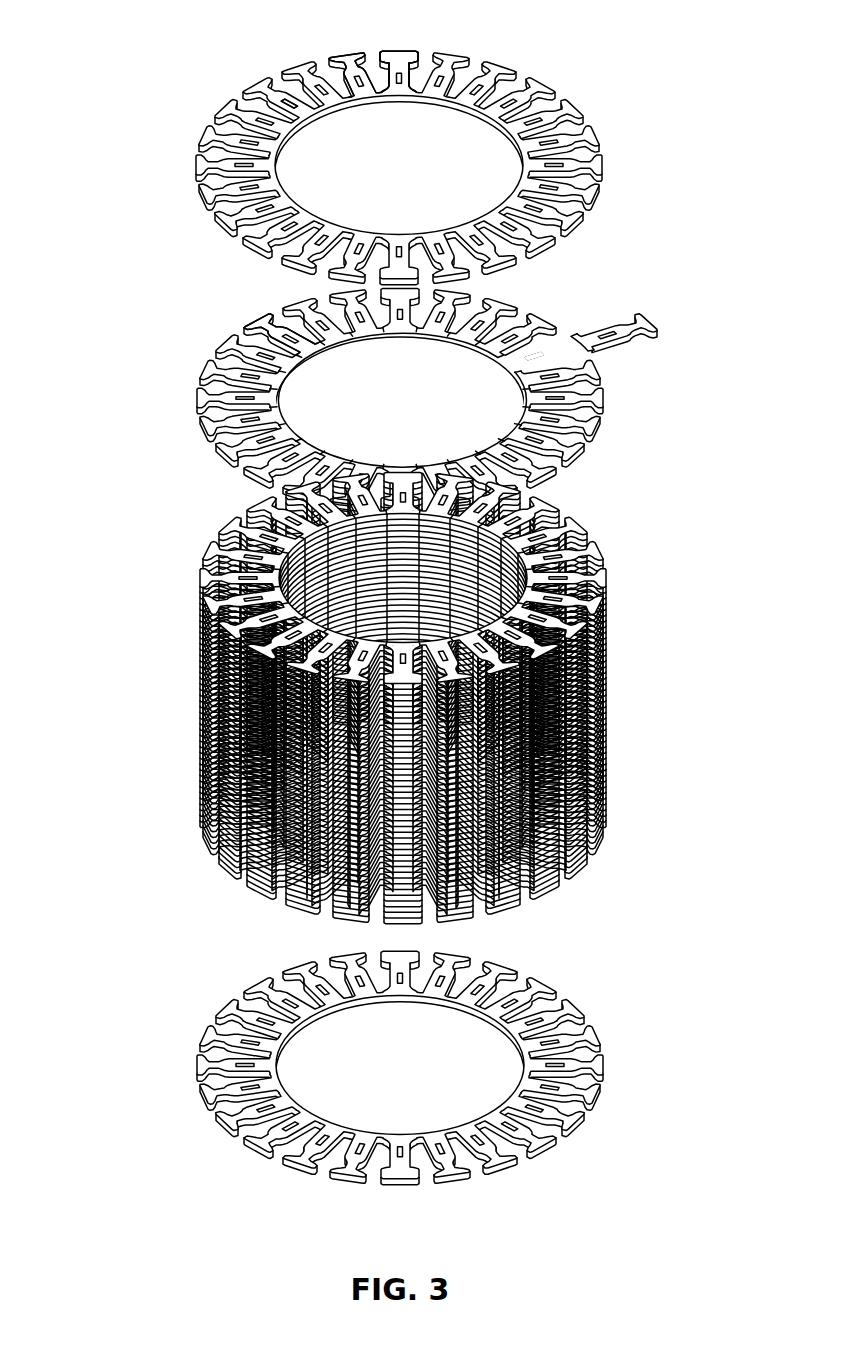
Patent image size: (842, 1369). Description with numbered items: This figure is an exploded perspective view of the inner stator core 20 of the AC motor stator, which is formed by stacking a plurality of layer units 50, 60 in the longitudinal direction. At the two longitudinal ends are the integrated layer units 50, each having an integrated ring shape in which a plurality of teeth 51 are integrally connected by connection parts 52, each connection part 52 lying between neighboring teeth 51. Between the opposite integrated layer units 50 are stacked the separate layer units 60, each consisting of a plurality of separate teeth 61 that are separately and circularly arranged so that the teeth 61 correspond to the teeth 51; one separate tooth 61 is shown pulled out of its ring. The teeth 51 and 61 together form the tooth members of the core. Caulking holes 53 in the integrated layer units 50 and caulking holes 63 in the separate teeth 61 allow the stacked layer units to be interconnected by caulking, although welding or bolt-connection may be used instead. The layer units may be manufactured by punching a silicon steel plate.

The inner stator core 20 is at (394, 593).
The integrated layer unit 50 is at (371, 593).
The tooth 51 is at (449, 57).
The connection part 52 is at (380, 90).
The caulking hole 53 is at (289, 98).
The separate layer unit 60 is at (464, 602).
The separate tooth 61 is at (614, 333).
The caulking hole 63 is at (282, 334).